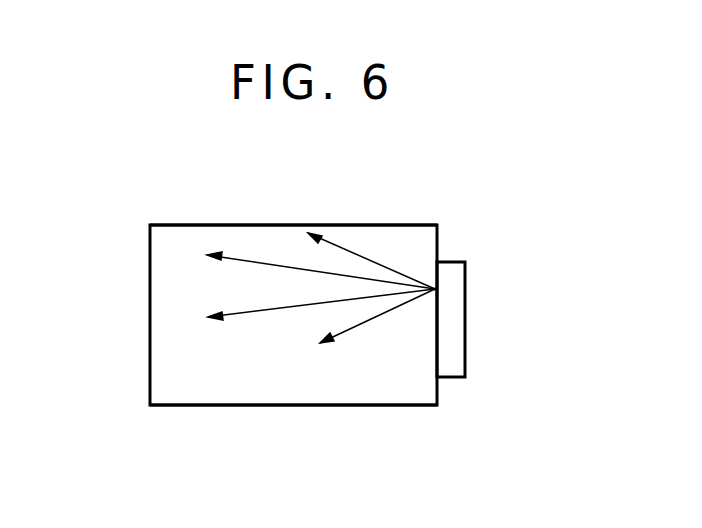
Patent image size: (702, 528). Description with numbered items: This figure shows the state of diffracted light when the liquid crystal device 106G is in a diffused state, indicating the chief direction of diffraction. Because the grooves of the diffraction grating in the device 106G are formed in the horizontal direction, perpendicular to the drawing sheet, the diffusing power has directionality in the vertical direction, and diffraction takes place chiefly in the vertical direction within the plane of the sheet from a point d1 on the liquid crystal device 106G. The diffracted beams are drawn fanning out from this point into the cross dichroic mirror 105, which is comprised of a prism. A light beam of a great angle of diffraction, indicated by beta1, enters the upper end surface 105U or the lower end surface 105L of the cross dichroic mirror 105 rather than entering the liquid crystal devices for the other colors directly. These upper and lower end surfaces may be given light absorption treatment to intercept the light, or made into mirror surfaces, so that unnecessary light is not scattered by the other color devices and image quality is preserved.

The cross dichroic mirror 105 is at (150, 297).
The upper end surface 105U is at (208, 223).
The lower end surface 105L is at (283, 407).
The liquid crystal device 106G is at (467, 283).
The angle of diffraction beta1 is at (342, 246).
The point on the liquid crystal device d1 is at (440, 288).